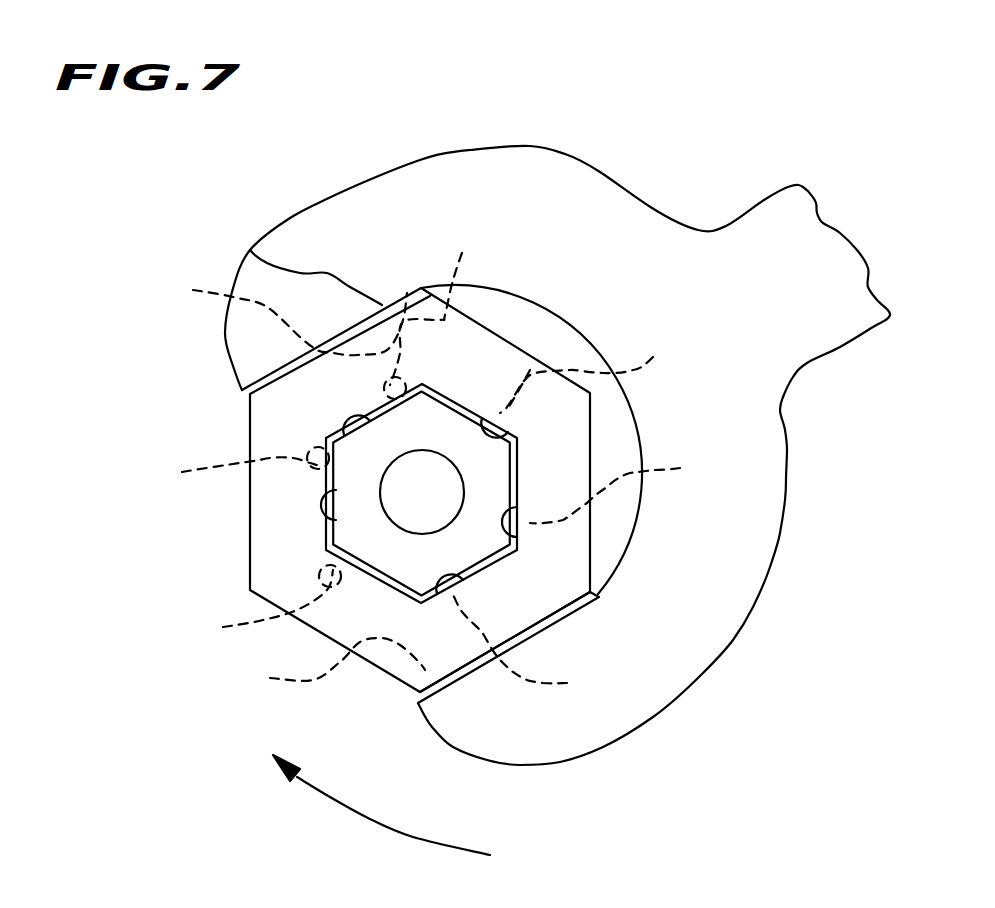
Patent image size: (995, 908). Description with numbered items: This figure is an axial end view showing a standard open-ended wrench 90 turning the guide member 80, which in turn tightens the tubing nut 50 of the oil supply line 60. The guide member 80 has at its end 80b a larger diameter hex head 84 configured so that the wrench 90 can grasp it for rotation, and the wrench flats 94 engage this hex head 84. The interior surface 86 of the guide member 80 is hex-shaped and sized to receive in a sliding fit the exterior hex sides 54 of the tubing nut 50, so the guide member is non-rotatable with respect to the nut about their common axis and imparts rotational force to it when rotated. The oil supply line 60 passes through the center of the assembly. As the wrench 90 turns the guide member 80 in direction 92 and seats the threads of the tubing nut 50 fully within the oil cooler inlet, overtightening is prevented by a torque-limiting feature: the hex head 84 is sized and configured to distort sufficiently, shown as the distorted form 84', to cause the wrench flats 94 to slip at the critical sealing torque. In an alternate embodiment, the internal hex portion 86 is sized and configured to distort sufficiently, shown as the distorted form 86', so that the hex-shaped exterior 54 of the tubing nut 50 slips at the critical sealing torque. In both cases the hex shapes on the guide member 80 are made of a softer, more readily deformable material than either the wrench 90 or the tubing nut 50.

The tubing nut 50 is at (453, 548).
The exterior hex sides 54 is at (513, 470).
The oil supply line 60 is at (453, 517).
The guide member 80 is at (185, 431).
The end of guide member 80b is at (480, 373).
The hex head 84 is at (426, 439).
The distorted hex head 84' is at (332, 484).
The interior hex surface 86 is at (332, 465).
The distorted interior hex portion 86' is at (429, 461).
The open-ended wrench 90 is at (338, 220).
The direction of rotation 92 is at (368, 818).
The wrench flats 94 is at (250, 250).